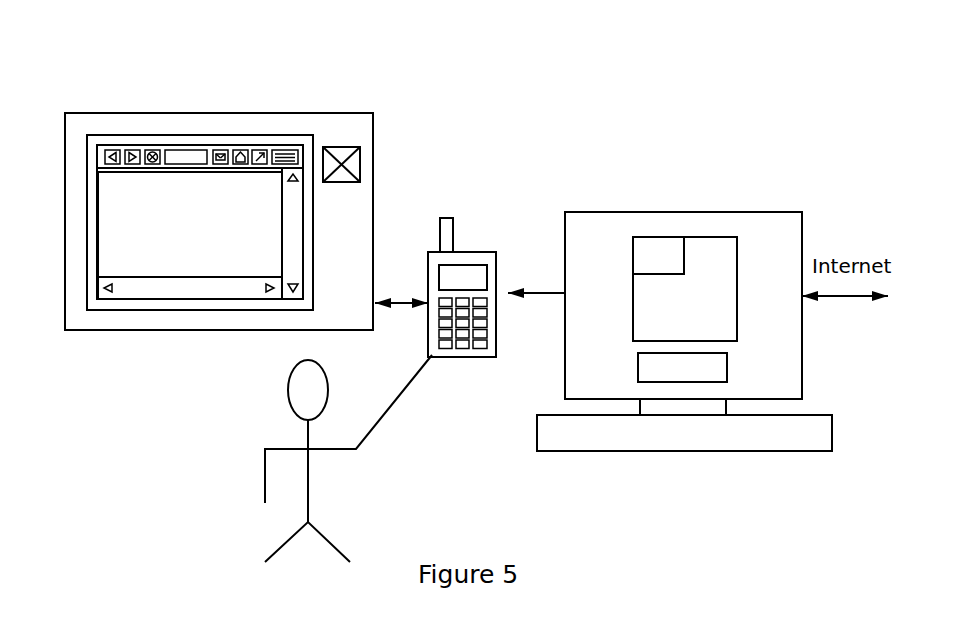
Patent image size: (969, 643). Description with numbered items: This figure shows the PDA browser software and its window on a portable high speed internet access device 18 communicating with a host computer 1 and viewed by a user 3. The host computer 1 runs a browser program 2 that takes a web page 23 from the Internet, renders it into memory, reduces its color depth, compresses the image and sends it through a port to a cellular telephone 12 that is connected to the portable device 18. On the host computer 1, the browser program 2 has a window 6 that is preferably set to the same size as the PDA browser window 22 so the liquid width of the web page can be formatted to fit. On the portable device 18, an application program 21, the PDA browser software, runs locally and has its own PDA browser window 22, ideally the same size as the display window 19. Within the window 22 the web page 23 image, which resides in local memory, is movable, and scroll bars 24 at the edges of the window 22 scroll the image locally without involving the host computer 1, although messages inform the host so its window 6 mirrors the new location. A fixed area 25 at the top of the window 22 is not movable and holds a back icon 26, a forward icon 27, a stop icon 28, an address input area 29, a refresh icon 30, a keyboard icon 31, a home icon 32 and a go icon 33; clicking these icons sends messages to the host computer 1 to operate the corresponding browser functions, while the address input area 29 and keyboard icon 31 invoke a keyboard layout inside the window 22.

The host computer 1 is at (684, 362).
The browser program 2 is at (645, 422).
The user 3 is at (348, 458).
The window of the browser 6 is at (692, 202).
The cellular telephone 12 is at (501, 254).
The portable high speed internet access device 18 is at (219, 254).
The display window 19 is at (250, 222).
The application program 21 is at (386, 151).
The PDA browser window 22 is at (174, 323).
The web page 23 is at (741, 235).
The scroll bars 24 is at (254, 272).
The fixed area 25 is at (183, 118).
The back icon 26 is at (149, 86).
The forward icon 27 is at (175, 96).
The stop icon 28 is at (190, 108).
The address input area 29 is at (201, 120).
The refresh icon 30 is at (275, 89).
The keyboard icon 31 is at (349, 125).
The home icon 32 is at (292, 104).
The go icon 33 is at (306, 117).